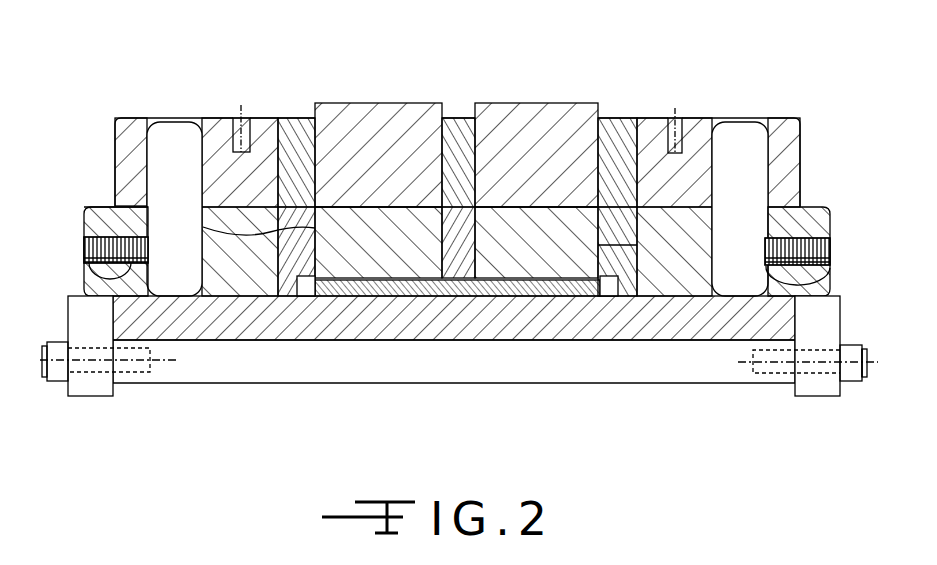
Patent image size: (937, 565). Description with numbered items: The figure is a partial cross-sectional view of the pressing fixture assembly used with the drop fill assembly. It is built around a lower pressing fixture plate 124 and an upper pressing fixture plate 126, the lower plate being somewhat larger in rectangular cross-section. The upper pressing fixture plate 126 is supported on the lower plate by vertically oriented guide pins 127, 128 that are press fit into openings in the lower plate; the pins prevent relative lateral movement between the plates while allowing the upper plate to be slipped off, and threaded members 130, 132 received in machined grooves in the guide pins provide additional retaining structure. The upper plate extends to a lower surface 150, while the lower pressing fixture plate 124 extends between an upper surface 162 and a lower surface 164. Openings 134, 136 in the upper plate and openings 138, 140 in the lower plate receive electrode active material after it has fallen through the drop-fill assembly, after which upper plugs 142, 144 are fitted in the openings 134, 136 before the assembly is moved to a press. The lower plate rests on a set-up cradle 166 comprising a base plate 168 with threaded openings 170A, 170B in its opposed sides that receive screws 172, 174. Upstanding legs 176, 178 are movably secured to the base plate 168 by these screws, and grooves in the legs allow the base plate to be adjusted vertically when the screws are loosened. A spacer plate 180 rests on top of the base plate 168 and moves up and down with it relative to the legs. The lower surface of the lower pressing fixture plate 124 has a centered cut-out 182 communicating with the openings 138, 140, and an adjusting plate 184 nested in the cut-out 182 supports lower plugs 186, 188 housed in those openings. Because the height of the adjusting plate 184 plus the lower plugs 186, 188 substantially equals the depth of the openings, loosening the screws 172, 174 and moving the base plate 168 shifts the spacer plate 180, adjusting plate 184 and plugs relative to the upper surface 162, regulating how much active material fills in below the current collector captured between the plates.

The lower pressing fixture plate 124 is at (822, 218).
The upper pressing fixture plate 126 is at (790, 158).
The guide pin 127 is at (740, 140).
The guide pin 128 is at (168, 137).
The threaded member 130 is at (830, 268).
The threaded member 132 is at (102, 278).
The opening 134 is at (600, 140).
The opening 136 is at (315, 143).
The opening 138 is at (600, 245).
The opening 140 is at (203, 227).
The upper plug 142 is at (530, 117).
The upper plug 144 is at (380, 113).
The lower surface 150 is at (128, 216).
The upper surface 162 is at (98, 202).
The lower surface 164 is at (230, 304).
The set-up cradle 166 is at (868, 342).
The base plate 168 is at (690, 377).
The threaded opening 170A is at (770, 378).
The threaded opening 170B is at (127, 374).
The screw 172 is at (850, 380).
The screw 174 is at (53, 372).
The upstanding leg 176 is at (867, 310).
The upstanding leg 178 is at (78, 300).
The spacer plate 180 is at (560, 338).
The cut-out 182 is at (607, 296).
The adjusting plate 184 is at (433, 292).
The lower plug 186 is at (500, 235).
The lower plug 188 is at (352, 235).